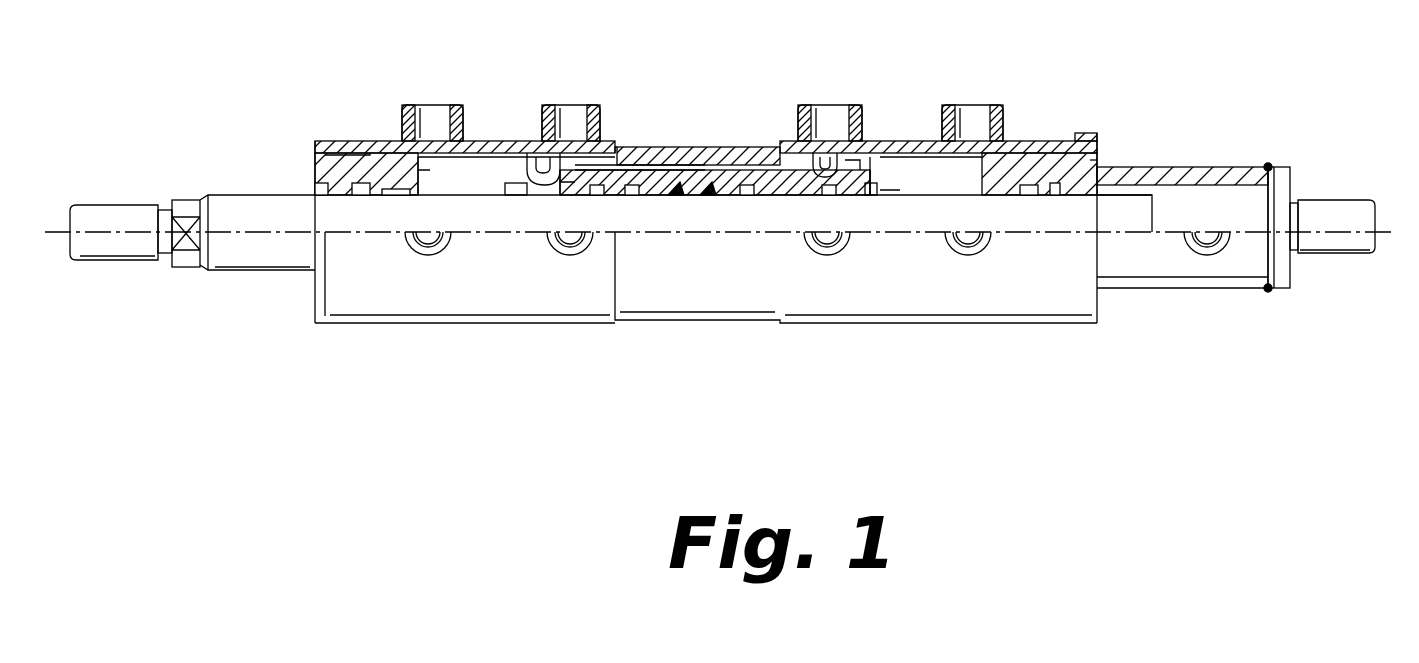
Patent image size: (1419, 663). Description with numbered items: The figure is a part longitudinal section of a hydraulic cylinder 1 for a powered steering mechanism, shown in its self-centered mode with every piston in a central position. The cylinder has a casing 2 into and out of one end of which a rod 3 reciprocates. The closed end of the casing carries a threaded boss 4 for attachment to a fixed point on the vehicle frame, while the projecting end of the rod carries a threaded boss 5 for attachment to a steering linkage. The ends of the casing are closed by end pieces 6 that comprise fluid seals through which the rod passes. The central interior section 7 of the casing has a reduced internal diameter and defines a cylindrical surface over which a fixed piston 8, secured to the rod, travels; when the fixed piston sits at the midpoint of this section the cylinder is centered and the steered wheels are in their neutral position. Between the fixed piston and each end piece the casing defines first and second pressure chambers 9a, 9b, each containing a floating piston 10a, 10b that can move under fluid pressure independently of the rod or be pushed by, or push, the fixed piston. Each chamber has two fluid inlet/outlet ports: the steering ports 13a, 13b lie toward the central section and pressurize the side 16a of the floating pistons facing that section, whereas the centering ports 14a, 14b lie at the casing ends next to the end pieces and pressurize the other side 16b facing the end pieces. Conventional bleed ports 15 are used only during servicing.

The hydraulic cylinder 1 is at (689, 112).
The casing 2 is at (493, 142).
The rod 3 is at (282, 217).
The threaded boss 4 is at (1355, 215).
The threaded boss 5 is at (108, 250).
The end piece 6 is at (365, 170).
The central interior section 7 is at (695, 158).
The fixed piston 8 is at (706, 176).
The first pressure chamber 9a is at (452, 182).
The second pressure chamber 9b is at (920, 172).
The floating piston 10a is at (594, 157).
The floating piston 10b is at (831, 187).
The first inlet/outlet steering port 13a is at (572, 122).
The second inlet/outlet steering port 13b is at (830, 120).
The first inlet/outlet centering port 14a is at (428, 125).
The second inlet/outlet centering port 14b is at (970, 120).
The bleed port 15 is at (440, 247).
The side of floating piston 16a is at (526, 146).
The other side of floating piston 16b is at (873, 180).